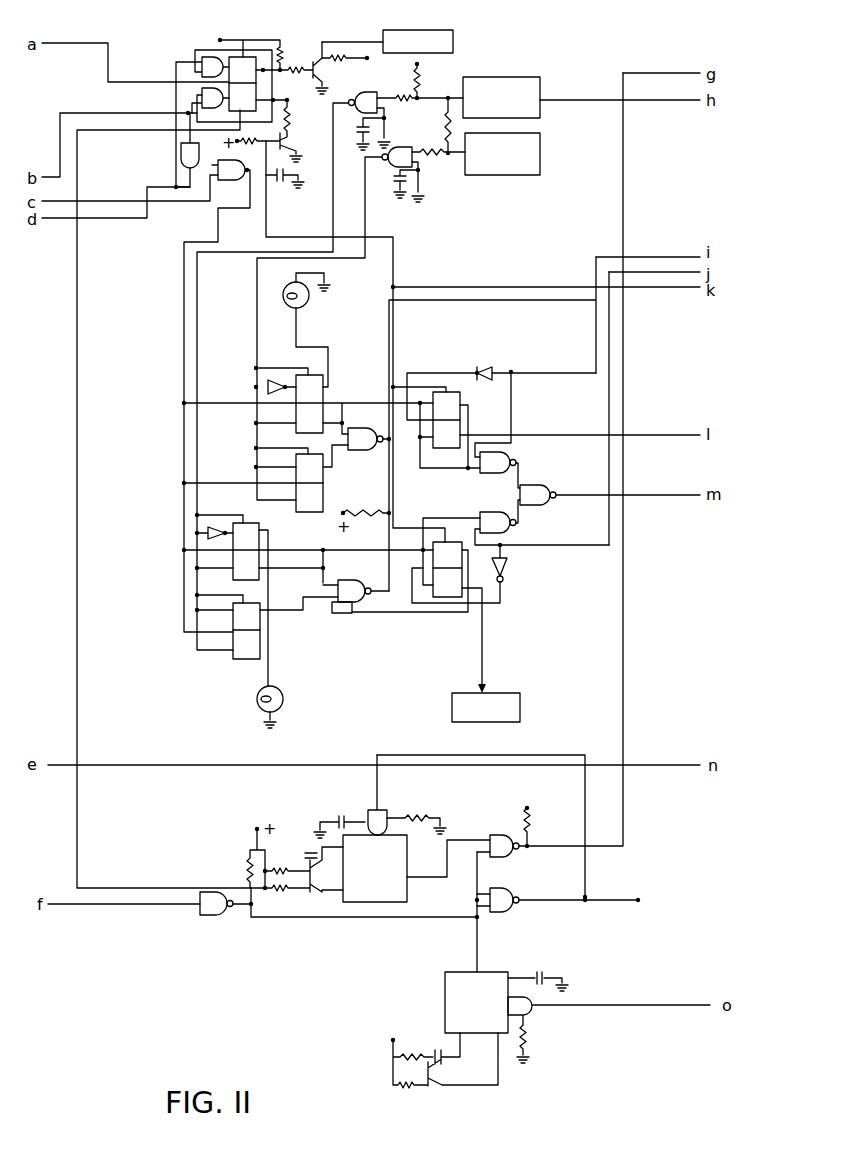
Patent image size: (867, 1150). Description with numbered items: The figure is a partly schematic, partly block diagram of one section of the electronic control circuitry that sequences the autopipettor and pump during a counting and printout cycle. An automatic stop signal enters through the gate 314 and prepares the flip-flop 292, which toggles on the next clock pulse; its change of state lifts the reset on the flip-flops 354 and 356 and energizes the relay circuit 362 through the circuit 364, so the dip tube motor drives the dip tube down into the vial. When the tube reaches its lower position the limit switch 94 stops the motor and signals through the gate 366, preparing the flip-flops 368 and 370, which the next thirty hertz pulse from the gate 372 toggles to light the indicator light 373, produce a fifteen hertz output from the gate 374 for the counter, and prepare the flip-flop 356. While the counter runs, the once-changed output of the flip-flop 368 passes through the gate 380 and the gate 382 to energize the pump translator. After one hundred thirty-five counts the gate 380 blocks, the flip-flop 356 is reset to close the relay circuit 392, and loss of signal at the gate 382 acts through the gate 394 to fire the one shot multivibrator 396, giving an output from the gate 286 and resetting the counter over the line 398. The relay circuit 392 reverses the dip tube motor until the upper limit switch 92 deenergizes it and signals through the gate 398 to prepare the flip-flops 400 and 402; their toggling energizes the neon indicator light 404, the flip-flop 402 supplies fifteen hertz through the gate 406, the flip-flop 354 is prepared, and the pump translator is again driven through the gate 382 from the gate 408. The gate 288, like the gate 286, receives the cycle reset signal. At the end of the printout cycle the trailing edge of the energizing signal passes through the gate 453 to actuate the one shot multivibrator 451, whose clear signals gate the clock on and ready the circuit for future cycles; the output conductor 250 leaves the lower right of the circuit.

The flip-flop 292 is at (250, 57).
The gate 314 is at (181, 155).
The gate 372 is at (228, 183).
The circuit 364 is at (320, 68).
The relay circuit 362 is at (455, 42).
The gate 366 is at (406, 102).
The gate 398 is at (423, 150).
The limit switch 94 is at (519, 78).
The upper limit switch 92 is at (524, 176).
The neon indicator light 404 is at (305, 305).
The flip-flop 400 is at (320, 372).
The flip-flop 402 is at (323, 490).
The gate 406 is at (352, 428).
The flip-flop 354 is at (450, 392).
The gate 408 is at (508, 450).
The gate 382 is at (532, 485).
The gate 380 is at (488, 512).
The flip-flop 356 is at (452, 598).
The relay circuit 392 is at (499, 693).
The flip-flop 368 is at (268, 530).
The flip-flop 370 is at (246, 660).
The indicator light 373 is at (257, 700).
The gate 374 is at (345, 614).
The gate 394 is at (372, 810).
The one shot multivibrator 396 is at (407, 900).
The gate 286 is at (500, 810).
The gate 288 is at (505, 912).
The output line 250 is at (612, 900).
The one shot multivibrator 451 is at (443, 993).
The gate 453 is at (536, 1014).